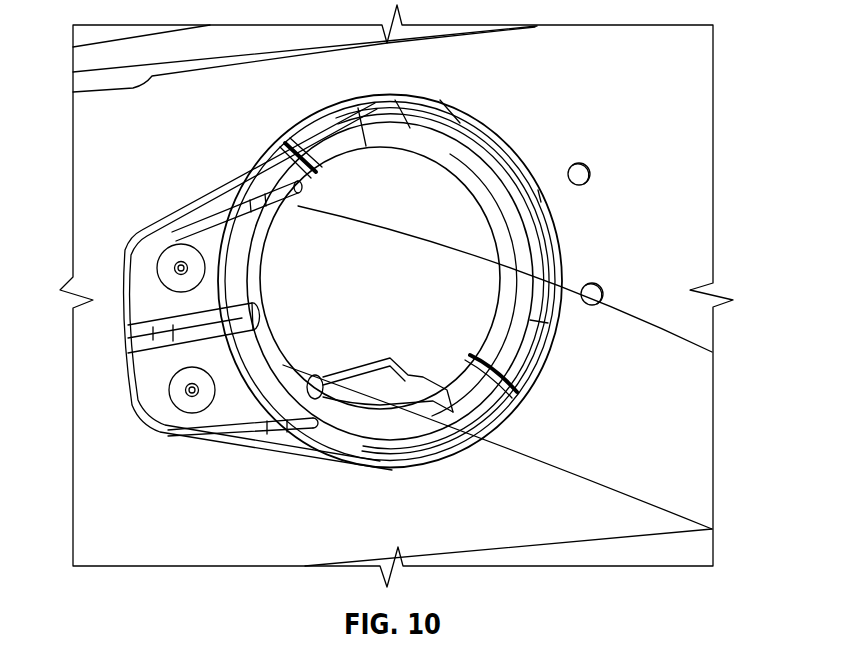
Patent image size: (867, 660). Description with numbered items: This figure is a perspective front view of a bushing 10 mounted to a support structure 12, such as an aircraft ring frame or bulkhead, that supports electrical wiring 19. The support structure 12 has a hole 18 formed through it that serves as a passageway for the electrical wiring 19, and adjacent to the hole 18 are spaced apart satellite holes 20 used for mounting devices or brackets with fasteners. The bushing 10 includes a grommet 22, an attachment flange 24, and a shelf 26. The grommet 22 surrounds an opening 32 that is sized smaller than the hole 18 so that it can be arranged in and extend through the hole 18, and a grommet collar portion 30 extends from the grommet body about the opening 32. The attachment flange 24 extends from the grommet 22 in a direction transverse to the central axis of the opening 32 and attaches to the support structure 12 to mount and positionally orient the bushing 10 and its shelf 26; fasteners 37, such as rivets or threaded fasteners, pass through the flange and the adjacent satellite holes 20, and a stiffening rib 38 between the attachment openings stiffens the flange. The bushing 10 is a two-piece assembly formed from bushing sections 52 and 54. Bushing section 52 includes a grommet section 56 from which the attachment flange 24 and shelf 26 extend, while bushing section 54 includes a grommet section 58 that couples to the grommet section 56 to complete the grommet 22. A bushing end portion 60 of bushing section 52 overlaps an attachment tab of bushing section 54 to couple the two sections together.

The bushing 10 is at (460, 120).
The support structure 12 is at (670, 72).
The hole 18 is at (445, 220).
The electrical wiring 19 is at (592, 340).
The satellite holes 20 is at (592, 177).
The grommet 22 is at (410, 128).
The attachment flange 24 is at (157, 300).
The shelf 26 is at (322, 380).
The grommet collar portion 30 is at (510, 262).
The opening 32 is at (439, 178).
The fasteners 37 is at (168, 250).
The stiffening rib 38 is at (143, 340).
The bushing section 52 is at (242, 185).
The bushing section 54 is at (440, 115).
The grommet section 56 is at (338, 420).
The grommet section 58 is at (540, 196).
The bushing end portion 60 is at (293, 157).